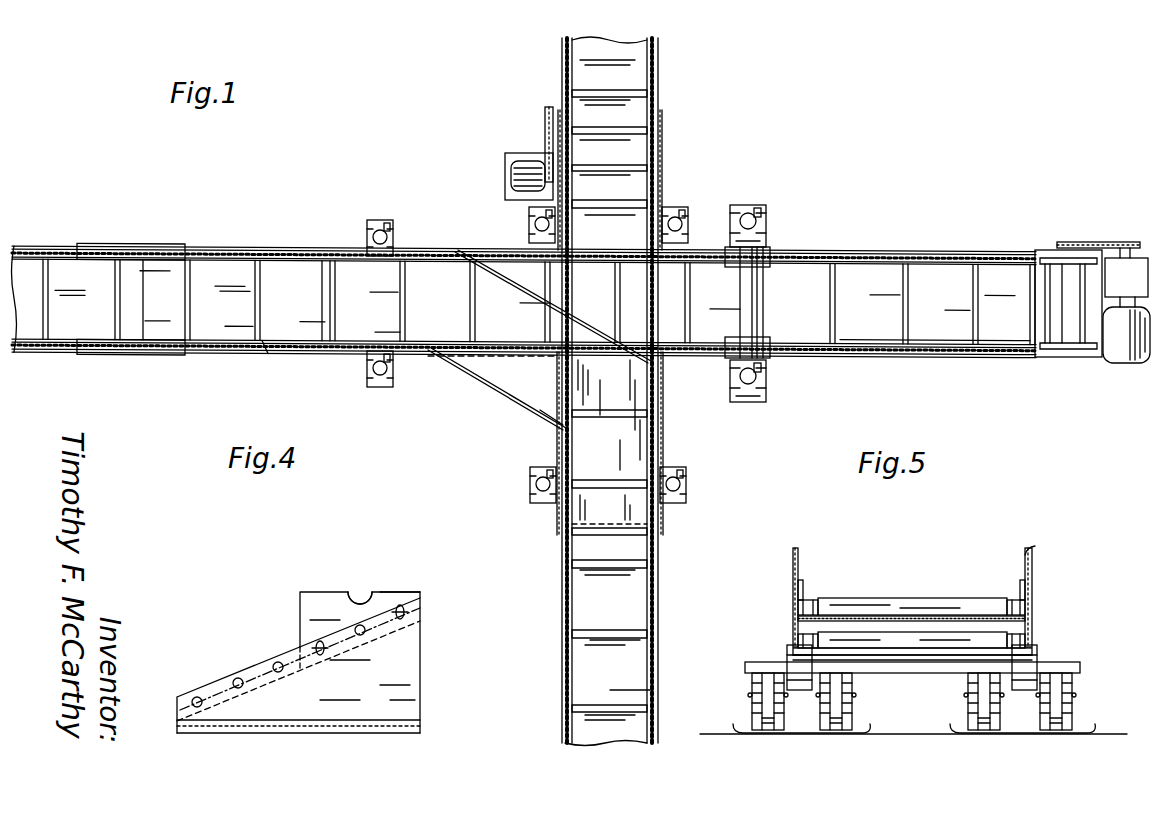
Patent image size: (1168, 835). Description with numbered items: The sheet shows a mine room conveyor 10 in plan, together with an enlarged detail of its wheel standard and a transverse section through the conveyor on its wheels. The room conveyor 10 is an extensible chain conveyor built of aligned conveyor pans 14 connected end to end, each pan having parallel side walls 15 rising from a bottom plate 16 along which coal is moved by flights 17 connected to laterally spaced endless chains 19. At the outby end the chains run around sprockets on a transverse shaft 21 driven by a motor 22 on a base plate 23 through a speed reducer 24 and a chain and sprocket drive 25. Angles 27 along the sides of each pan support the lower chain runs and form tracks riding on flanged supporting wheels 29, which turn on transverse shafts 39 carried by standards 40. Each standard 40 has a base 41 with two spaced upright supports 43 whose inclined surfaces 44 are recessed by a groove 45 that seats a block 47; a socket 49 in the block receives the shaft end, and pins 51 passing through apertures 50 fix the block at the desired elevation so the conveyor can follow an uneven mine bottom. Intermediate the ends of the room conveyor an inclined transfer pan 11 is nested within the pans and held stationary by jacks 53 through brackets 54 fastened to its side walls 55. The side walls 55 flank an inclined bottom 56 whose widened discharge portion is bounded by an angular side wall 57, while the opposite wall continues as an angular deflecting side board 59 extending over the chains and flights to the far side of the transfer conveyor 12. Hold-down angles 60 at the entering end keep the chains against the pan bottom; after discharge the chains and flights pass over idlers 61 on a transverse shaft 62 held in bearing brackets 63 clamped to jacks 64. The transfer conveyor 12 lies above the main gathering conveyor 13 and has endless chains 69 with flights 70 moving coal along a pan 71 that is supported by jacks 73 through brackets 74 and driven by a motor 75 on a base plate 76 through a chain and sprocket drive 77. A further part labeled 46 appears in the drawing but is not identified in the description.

In FIG. 1, the room conveyor 10 is at (66, 244).
In FIG. 1, the transfer pan 11 is at (514, 380).
In FIG. 1, the transfer conveyor 12 is at (660, 455).
In FIG. 1, the main gathering conveyor 13 is at (656, 580).
In FIG. 1, the conveyor pans 14 is at (1003, 252).
In FIG. 5, the conveyor pans 14 is at (1036, 550).
In FIG. 1, the side walls 15 is at (157, 247).
In FIG. 5, the side walls 15 is at (793, 578).
In FIG. 1, the bottom plate 16 is at (936, 358).
In FIG. 5, the bottom plate 16 is at (930, 618).
In FIG. 1, the flights 17 is at (108, 298).
In FIG. 5, the flights 17 is at (880, 598).
In FIG. 1, the endless chains 19 is at (212, 262).
In FIG. 5, the endless chains 19 is at (820, 600).
In FIG. 1, the transverse shaft 21 is at (1060, 345).
In FIG. 1, the motor 22 is at (1125, 365).
In FIG. 1, the base plate 23 is at (1100, 360).
In FIG. 1, the speed reducer 24 is at (1126, 282).
In FIG. 1, the chain and sprocket drive 25 is at (1080, 243).
In FIG. 5, the angles 27 is at (793, 628).
In FIG. 5, the flanged supporting wheels 29 is at (795, 656).
In FIG. 5, the transverse shafts 39 is at (890, 672).
In FIG. 4, the standards 40 is at (425, 690).
In FIG. 5, the standards 40 is at (746, 704).
In FIG. 4, the base 41 is at (340, 738).
In FIG. 5, the base 41 is at (750, 735).
In FIG. 4, the upright supports 43 is at (415, 648).
In FIG. 5, the upright supports 43 is at (1075, 695).
In FIG. 4, the inclined surfaces 44 is at (255, 660).
In FIG. 4, the groove 45 is at (236, 675).
In FIG. 5, the groove 45 is at (750, 721).
In FIG. 1, the cross member 46 is at (268, 352).
In FIG. 4, the block 47 is at (400, 595).
In FIG. 5, the block 47 is at (760, 676).
In FIG. 4, the socket 49 is at (360, 592).
In FIG. 4, the apertures 50 is at (196, 697).
In FIG. 4, the pins 51 is at (312, 647).
In FIG. 1, the jacks 53 is at (386, 222).
In FIG. 1, the brackets 54 is at (406, 232).
In FIG. 1, the side walls 55 is at (326, 253).
In FIG. 1, the bottom 56 is at (472, 377).
In FIG. 1, the angular side wall 57 is at (532, 420).
In FIG. 1, the angular deflecting side board 59 is at (495, 268).
In FIG. 1, the hold-down angles 60 is at (130, 262).
In FIG. 1, the idlers 61 is at (740, 300).
In FIG. 1, the transverse shaft 62 is at (758, 300).
In FIG. 1, the bearing brackets 63 is at (766, 235).
In FIG. 1, the jacks 64 is at (760, 212).
In FIG. 1, the endless chains 69 is at (572, 527).
In FIG. 1, the flights 70 is at (576, 430).
In FIG. 1, the pan 71 is at (662, 545).
In FIG. 1, the jacks 73 is at (540, 224).
In FIG. 1, the brackets 74 is at (530, 232).
In FIG. 1, the motor 75 is at (525, 160).
In FIG. 1, the base plate 76 is at (505, 160).
In FIG. 1, the chain and sprocket drive 77 is at (548, 110).